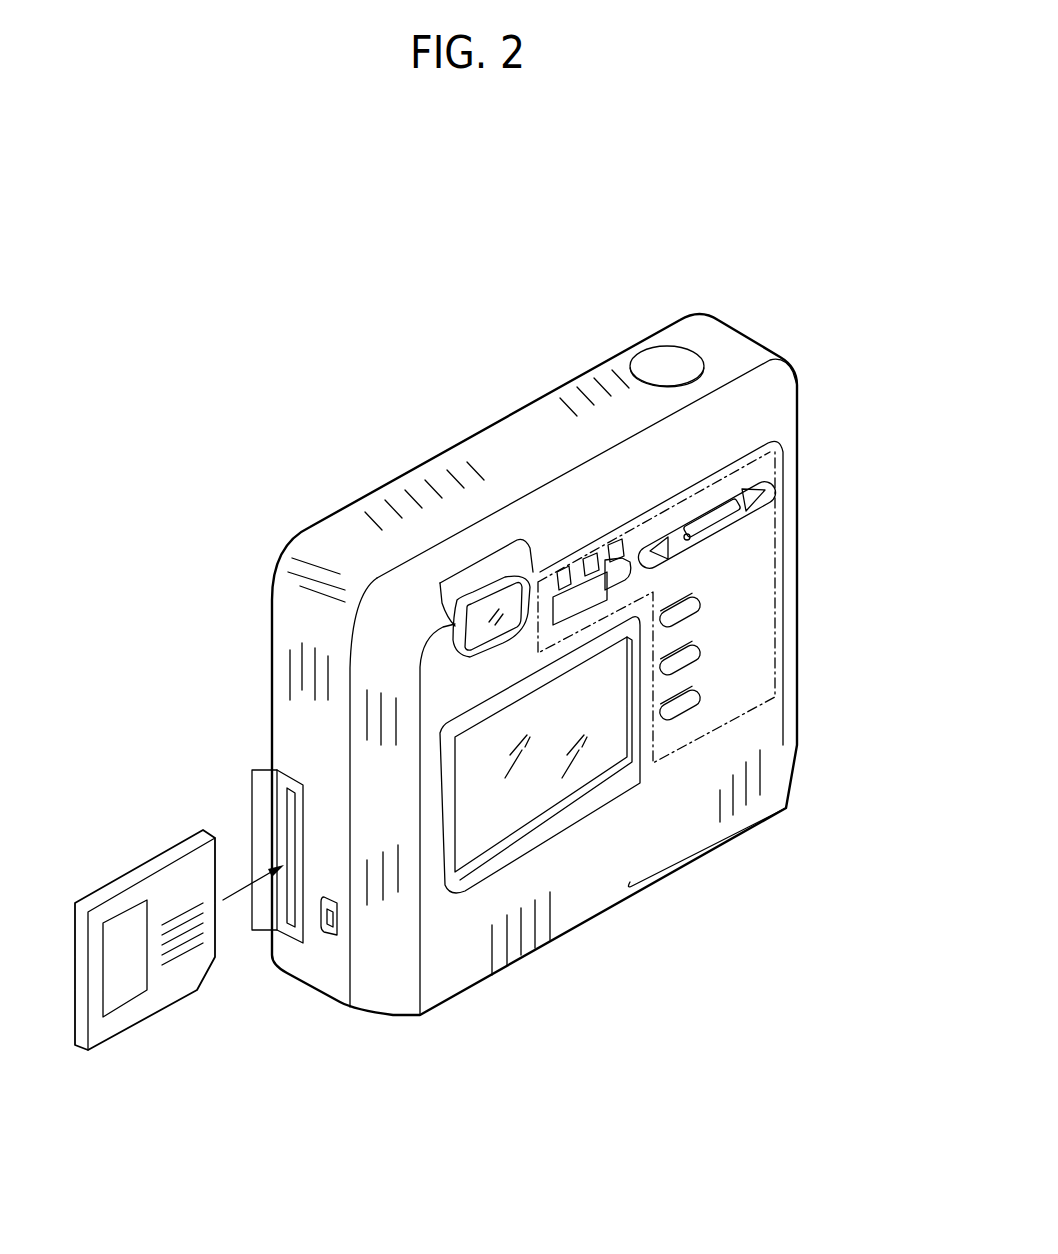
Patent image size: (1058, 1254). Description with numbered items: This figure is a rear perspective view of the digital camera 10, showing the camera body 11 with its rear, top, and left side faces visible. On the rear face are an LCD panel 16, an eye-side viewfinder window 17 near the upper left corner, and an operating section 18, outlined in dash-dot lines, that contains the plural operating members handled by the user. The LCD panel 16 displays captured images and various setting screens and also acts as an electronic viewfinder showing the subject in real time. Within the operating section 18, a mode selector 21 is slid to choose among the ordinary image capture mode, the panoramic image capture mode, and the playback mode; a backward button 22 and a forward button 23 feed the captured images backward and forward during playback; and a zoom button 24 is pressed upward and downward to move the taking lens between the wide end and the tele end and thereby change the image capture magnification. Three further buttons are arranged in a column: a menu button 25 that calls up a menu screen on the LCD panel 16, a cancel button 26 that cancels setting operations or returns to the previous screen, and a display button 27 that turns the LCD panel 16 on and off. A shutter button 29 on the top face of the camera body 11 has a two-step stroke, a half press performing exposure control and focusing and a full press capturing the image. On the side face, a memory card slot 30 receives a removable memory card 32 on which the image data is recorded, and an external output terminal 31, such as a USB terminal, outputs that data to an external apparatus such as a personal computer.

The digital camera 10 is at (362, 450).
The camera body 11 is at (762, 326).
The LCD panel 16 is at (537, 808).
The eye-side viewfinder window 17 is at (477, 628).
The operating section 18 is at (798, 553).
The mode selector 21 is at (598, 590).
The backward button 22 is at (663, 548).
The forward button 23 is at (753, 500).
The zoom button 24 is at (717, 527).
The menu button 25 is at (690, 610).
The cancel button 26 is at (690, 657).
The display button 27 is at (690, 703).
The shutter button 29 is at (663, 370).
The memory card slot 30 is at (290, 790).
The external output terminal 31 is at (340, 921).
The memory card 32 is at (147, 867).